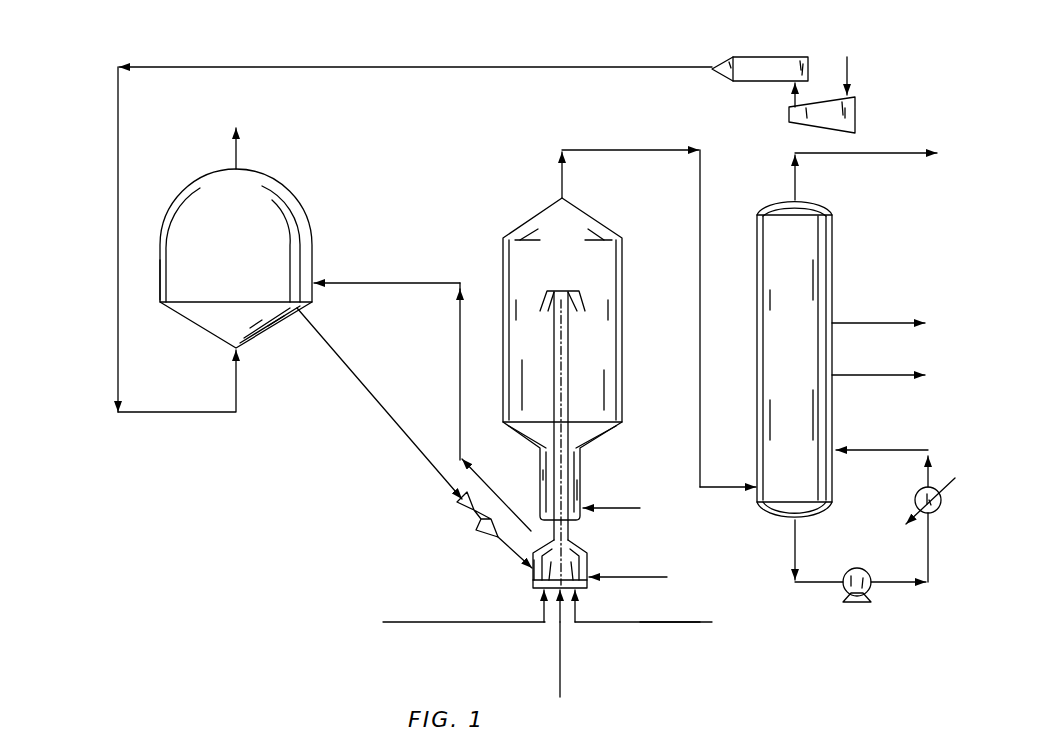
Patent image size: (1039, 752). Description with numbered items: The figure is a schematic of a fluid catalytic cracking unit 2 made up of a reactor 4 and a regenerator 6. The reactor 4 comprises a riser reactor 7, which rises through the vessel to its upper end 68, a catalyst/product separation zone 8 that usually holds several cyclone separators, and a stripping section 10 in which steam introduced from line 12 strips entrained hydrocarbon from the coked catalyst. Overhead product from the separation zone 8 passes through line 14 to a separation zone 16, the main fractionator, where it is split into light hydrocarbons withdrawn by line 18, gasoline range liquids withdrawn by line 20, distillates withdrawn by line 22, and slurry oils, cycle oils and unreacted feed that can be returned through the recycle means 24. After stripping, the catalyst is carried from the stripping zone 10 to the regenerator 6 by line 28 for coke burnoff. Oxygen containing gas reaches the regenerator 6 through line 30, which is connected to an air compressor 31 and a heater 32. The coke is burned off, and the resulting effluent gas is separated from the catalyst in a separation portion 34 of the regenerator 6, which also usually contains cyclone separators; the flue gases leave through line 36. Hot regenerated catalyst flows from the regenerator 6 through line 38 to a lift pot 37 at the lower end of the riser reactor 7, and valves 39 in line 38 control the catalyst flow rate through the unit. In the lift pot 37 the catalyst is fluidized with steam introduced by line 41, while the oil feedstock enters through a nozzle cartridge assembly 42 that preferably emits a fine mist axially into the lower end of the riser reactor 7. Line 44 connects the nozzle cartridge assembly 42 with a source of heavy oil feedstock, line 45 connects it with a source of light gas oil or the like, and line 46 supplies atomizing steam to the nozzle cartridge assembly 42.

The fluid catalytic cracking unit 2 is at (103, 456).
The reactor 4 is at (623, 334).
The regenerator 6 is at (313, 237).
The riser reactor 7 is at (569, 368).
The catalyst/product separation zone 8 is at (553, 253).
The stripping section 10 is at (581, 478).
The line 12 is at (634, 508).
The line 14 is at (622, 150).
The separation zone 16 is at (784, 282).
The line 18 is at (835, 153).
The line 20 is at (880, 323).
The line 22 is at (886, 375).
The recycle means 24 is at (959, 595).
The line 28 is at (385, 283).
The line 30 is at (400, 66).
The air compressor 31 is at (856, 104).
The heater 32 is at (768, 57).
The separation portion 34 is at (224, 237).
The line 36 is at (238, 152).
The lift pot 37 is at (581, 542).
The line 38 is at (388, 410).
The valves 39 is at (470, 520).
The line 41 is at (647, 577).
The nozzle cartridge assembly 42 is at (531, 578).
The line 44 is at (440, 622).
The line 45 is at (561, 660).
The line 46 is at (652, 622).
The upper end 68 is at (575, 292).